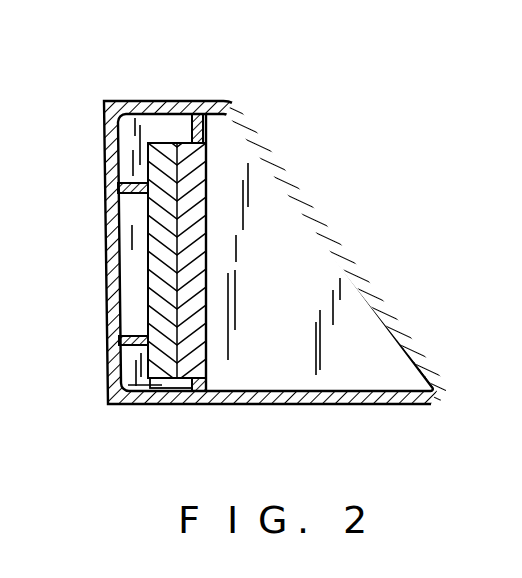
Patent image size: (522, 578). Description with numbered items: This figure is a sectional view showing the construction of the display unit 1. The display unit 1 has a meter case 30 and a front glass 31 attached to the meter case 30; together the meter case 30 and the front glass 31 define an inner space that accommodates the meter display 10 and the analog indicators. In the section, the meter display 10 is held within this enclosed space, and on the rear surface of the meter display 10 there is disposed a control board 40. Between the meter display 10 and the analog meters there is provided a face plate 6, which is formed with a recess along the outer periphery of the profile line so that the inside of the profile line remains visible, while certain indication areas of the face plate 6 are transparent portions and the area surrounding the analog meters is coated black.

The display unit 1 is at (212, 92).
The face plate 6 is at (198, 133).
The meter display 10 is at (190, 383).
The meter case 30 is at (107, 336).
The front glass 31 is at (352, 250).
The control board 40 is at (158, 385).